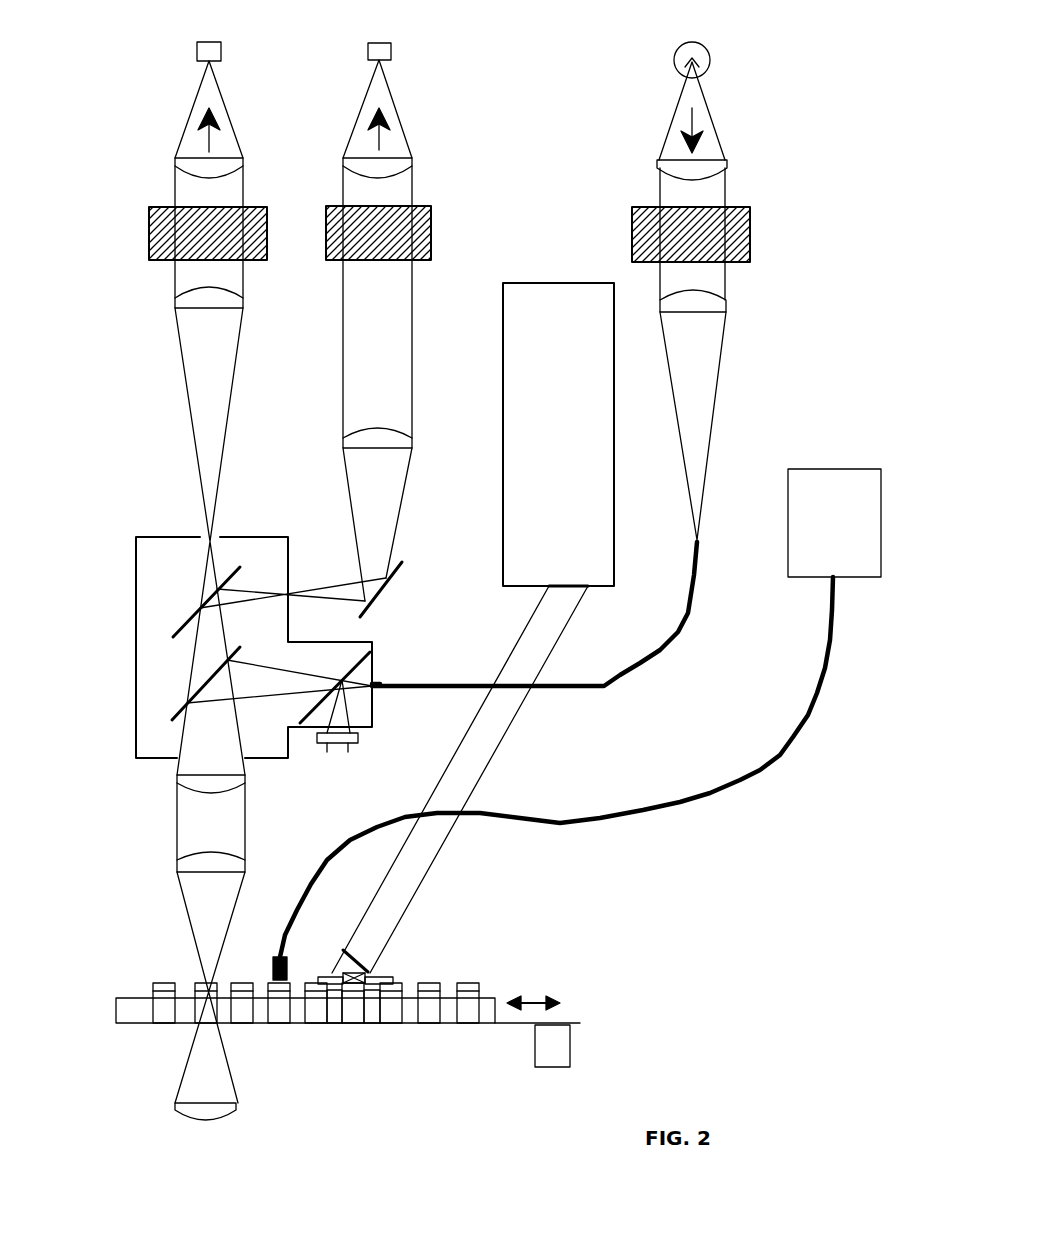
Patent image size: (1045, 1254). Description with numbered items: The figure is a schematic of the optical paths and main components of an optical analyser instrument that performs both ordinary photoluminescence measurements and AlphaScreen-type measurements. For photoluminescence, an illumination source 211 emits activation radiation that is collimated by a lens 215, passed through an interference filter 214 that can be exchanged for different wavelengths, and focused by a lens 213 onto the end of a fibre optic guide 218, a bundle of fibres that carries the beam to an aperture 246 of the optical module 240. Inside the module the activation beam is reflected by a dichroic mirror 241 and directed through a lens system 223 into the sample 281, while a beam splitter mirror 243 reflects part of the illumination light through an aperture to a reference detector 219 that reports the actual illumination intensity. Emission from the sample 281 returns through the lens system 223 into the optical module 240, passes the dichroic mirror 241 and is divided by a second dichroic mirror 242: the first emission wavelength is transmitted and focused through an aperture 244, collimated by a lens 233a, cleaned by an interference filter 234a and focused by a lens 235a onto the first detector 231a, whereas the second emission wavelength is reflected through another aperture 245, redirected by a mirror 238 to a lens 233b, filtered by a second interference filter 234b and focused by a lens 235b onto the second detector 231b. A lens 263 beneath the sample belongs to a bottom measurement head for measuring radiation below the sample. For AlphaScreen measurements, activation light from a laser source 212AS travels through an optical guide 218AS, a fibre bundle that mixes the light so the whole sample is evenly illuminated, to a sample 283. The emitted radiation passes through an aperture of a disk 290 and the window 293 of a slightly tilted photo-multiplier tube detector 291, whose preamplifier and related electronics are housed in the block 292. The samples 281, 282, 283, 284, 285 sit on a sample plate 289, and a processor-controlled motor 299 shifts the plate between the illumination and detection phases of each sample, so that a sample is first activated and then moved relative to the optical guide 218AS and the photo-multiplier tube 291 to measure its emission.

The illumination source 211 is at (726, 93).
The lens 215 is at (733, 155).
The interference filter 214 is at (735, 234).
The lens 213 is at (740, 291).
The laser source 212AS is at (850, 493).
The fibre optic guide 218 is at (564, 614).
The optical guide 218AS is at (553, 778).
The block 292 is at (529, 434).
The detector 291 is at (460, 779).
The window 293 is at (340, 934).
The disk 290 is at (385, 956).
The optical module 240 is at (219, 647).
The aperture 244 is at (252, 523).
The second mirror 242 is at (190, 600).
The dichroic mirror 241 is at (169, 683).
The aperture 245 is at (293, 577).
The mirror 238 is at (415, 593).
The beam splitter mirror 243 is at (316, 678).
The aperture 246 is at (414, 703).
The reference detector 219 is at (329, 741).
The lens system 223 is at (245, 823).
The lens 263 is at (179, 1139).
The sample 281 is at (348, 1000).
The sample 282 is at (273, 1031).
The sample 283 is at (314, 1030).
The sample 284 is at (351, 1030).
The sample 285 is at (389, 1030).
The sample plate 289 is at (526, 978).
The processor-controlled motor 299 is at (511, 1061).
The lens 233a is at (258, 289).
The lens 233b is at (417, 424).
The interference filter 234a is at (176, 240).
The second interference filter 234b is at (427, 231).
The lens 235a is at (257, 152).
The focusing lens 235b is at (428, 152).
The first detector 231a is at (245, 89).
The second detector 231b is at (416, 89).